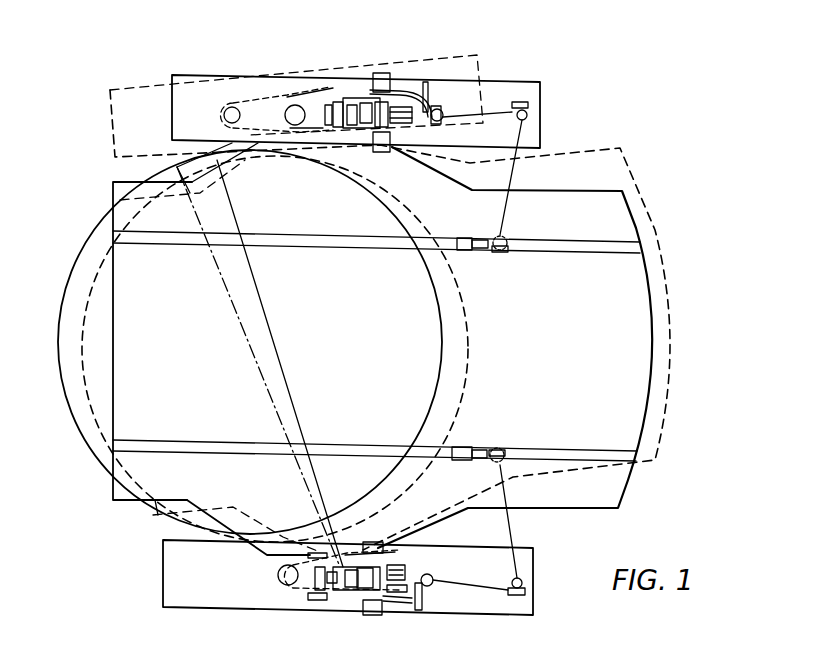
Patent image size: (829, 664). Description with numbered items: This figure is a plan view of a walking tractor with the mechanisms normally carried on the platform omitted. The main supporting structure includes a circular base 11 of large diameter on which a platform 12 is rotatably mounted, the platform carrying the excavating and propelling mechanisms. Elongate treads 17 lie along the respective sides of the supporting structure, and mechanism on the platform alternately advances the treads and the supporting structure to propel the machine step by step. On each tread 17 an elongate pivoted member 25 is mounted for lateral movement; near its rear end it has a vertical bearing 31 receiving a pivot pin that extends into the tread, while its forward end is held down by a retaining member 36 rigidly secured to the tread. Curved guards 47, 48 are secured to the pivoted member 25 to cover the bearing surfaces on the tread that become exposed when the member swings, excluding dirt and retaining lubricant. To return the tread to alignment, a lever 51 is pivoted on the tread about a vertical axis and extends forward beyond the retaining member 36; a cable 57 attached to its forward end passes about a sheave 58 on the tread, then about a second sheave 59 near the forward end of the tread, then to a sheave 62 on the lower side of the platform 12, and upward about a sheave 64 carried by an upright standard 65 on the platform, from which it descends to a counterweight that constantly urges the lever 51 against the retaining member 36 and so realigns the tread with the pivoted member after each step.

The circular base 11 is at (73, 372).
The platform 12 is at (600, 495).
The tread 17 is at (472, 75).
The pivoted member 25 is at (262, 103).
The vertical bearing 31 is at (284, 117).
The retaining member 36 is at (407, 573).
The guard 47 is at (383, 77).
The guard 48 is at (315, 602).
The lever 51 is at (410, 92).
The cable 57 is at (513, 528).
The sheave 58 is at (440, 113).
The second sheave 59 is at (530, 112).
The sheave 62 is at (500, 235).
The sheave 64 is at (462, 238).
The upright standard 65 is at (468, 250).